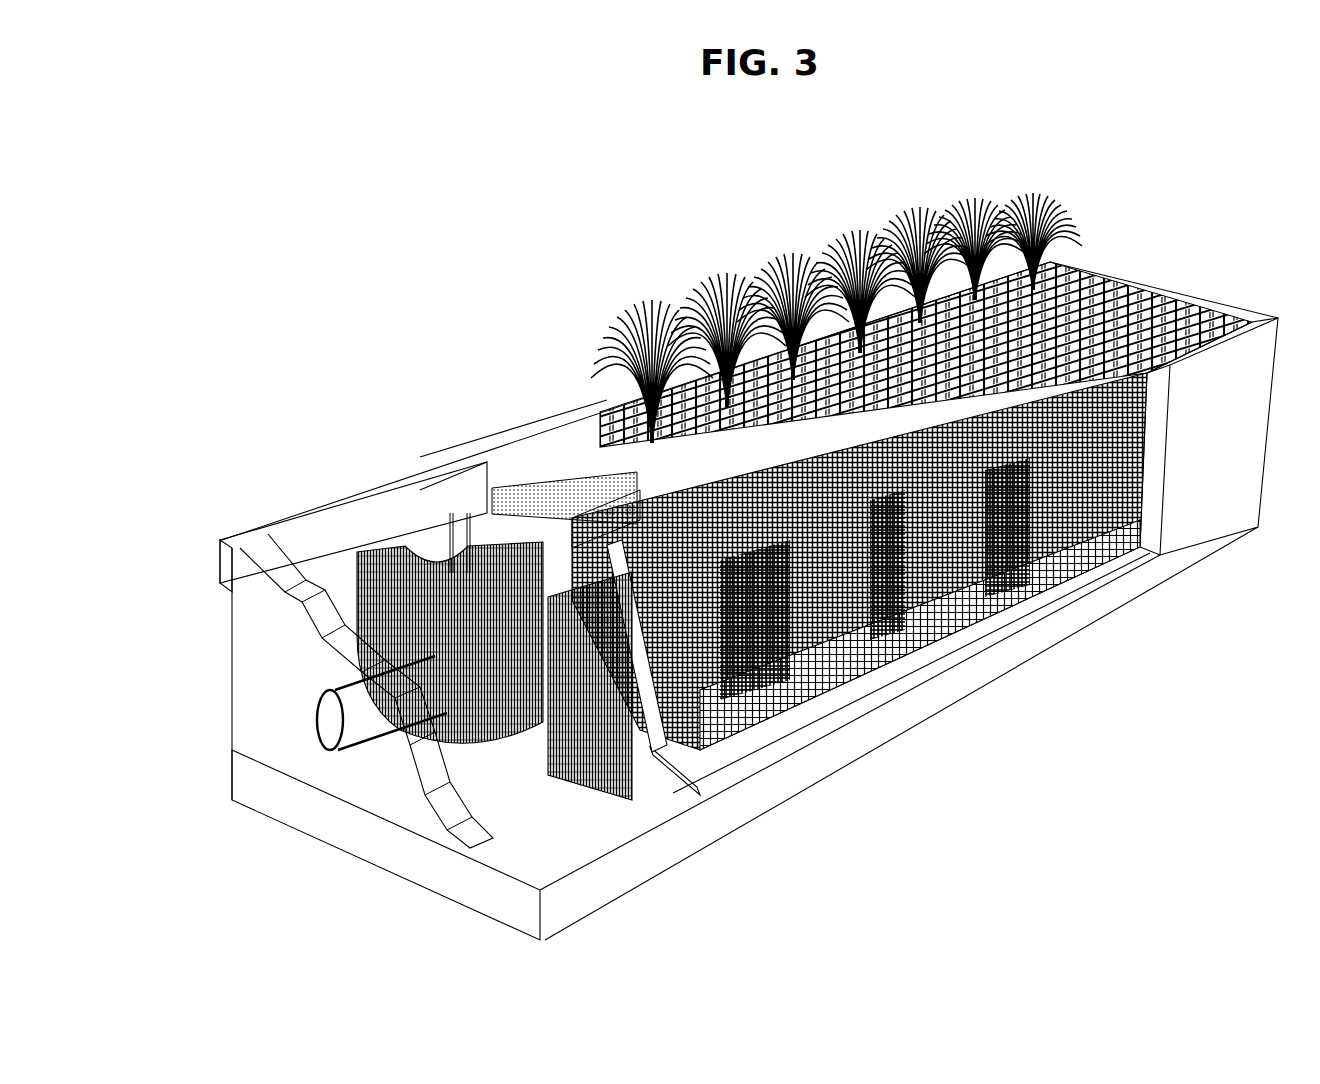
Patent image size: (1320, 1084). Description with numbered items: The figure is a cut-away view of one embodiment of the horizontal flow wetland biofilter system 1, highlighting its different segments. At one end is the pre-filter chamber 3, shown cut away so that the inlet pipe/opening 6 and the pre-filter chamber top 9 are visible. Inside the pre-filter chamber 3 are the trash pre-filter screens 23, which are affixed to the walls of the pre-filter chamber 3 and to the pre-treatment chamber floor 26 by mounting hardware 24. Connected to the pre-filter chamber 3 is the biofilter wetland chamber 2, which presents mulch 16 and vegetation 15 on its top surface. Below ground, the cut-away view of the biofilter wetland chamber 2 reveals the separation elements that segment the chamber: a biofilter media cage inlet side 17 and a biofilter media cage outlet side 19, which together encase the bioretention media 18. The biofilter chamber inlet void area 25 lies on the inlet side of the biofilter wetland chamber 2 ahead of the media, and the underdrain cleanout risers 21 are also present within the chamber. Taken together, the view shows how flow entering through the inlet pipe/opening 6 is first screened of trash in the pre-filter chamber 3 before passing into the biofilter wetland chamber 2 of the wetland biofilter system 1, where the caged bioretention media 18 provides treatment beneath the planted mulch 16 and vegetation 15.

The wetland biofilter system 1 is at (1260, 540).
The biofilter wetland chamber 2 is at (1086, 208).
The pre-filter chamber 3 is at (430, 457).
The inlet pipe/opening 6 is at (333, 710).
The pre-filter chamber top 9 is at (243, 565).
The vegetation 15 is at (1030, 222).
The mulch 16 is at (1110, 300).
The biofilter media cage inlet side 17 is at (960, 617).
The bioretention media 18 is at (543, 507).
The biofilter media cage outlet side 19 is at (633, 495).
The underdrain cleanout risers 21 is at (672, 480).
The trash pre-filter screens 23 is at (400, 583).
The mounting hardware 24 is at (625, 733).
The biofilter chamber inlet void area 25 is at (848, 703).
The pre-treatment chamber floor 26 is at (530, 847).